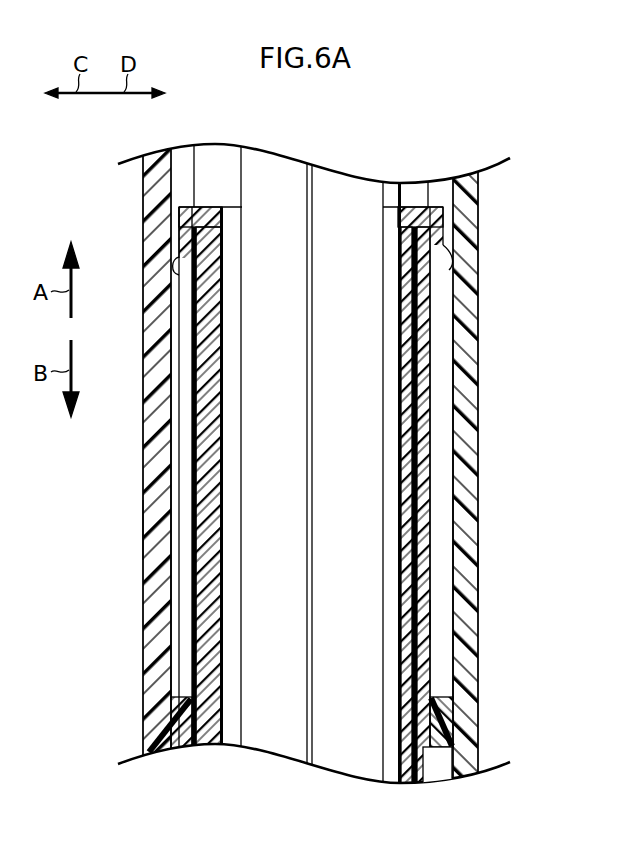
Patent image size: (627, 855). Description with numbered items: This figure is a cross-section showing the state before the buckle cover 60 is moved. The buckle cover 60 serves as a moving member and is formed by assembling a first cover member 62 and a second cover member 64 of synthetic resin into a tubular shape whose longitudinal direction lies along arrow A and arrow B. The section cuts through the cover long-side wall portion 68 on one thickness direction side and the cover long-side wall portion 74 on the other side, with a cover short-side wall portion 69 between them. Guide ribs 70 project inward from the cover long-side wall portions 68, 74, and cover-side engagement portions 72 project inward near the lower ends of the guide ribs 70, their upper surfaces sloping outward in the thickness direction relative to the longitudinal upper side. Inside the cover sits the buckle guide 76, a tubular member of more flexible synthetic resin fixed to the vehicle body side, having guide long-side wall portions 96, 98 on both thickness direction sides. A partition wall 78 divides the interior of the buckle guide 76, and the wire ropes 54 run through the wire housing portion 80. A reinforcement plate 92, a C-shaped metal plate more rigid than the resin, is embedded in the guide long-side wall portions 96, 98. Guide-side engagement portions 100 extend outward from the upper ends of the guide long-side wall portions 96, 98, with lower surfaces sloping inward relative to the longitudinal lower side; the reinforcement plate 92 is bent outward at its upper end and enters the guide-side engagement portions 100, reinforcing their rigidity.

The wire ropes 54 is at (277, 160).
The buckle cover 60 is at (495, 432).
The first cover member 62 is at (136, 533).
The second cover member 64 is at (490, 568).
The cover long-side wall portion 68 is at (143, 473).
The cover short-side wall portion 69 is at (402, 193).
The guide ribs 70 is at (177, 432).
The cover-side engagement portions 72 is at (175, 712).
The cover long-side wall portion 74 is at (478, 498).
The buckle guide 76 is at (443, 618).
The partition wall 78 is at (395, 468).
The wire housing portion 80 is at (392, 400).
The reinforcement plate 92 is at (208, 499).
The guide long-side wall portion 96 is at (190, 577).
The guide long-side wall portion 98 is at (428, 548).
The guide-side engagement portions 100 is at (175, 268).